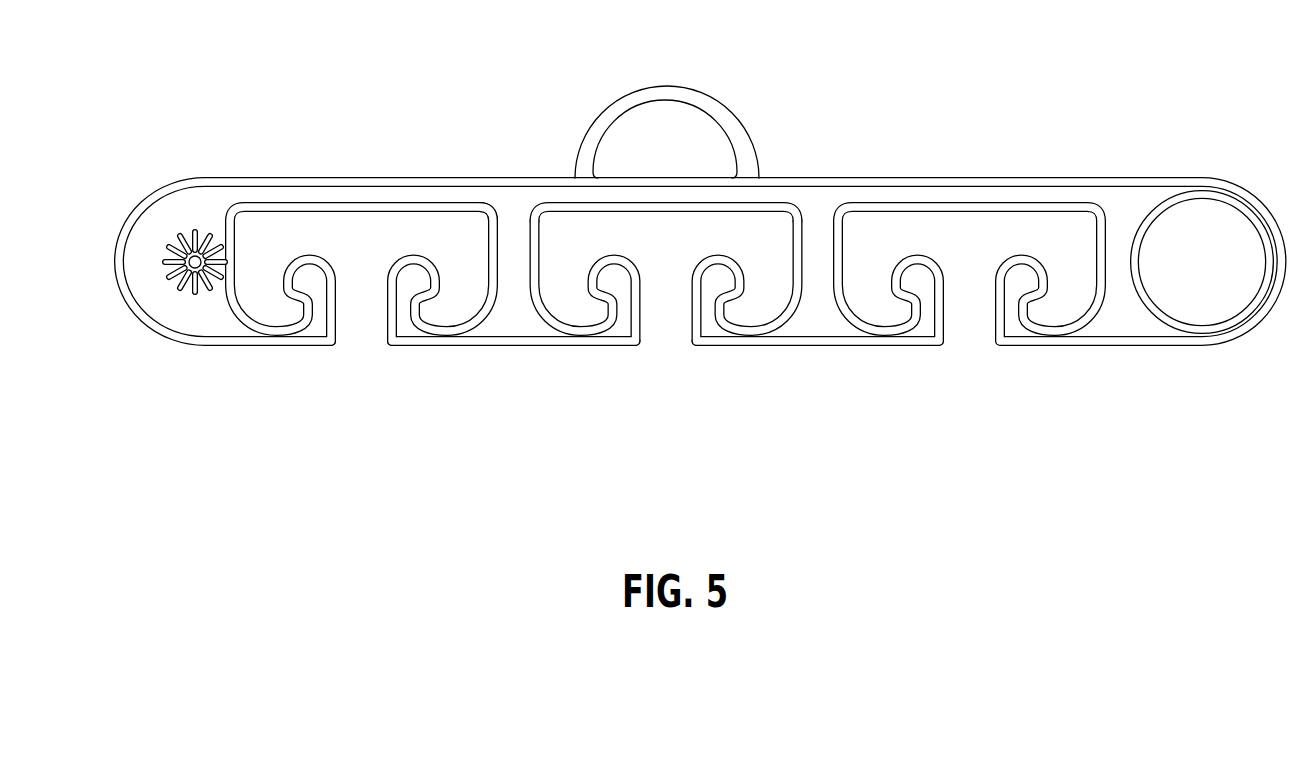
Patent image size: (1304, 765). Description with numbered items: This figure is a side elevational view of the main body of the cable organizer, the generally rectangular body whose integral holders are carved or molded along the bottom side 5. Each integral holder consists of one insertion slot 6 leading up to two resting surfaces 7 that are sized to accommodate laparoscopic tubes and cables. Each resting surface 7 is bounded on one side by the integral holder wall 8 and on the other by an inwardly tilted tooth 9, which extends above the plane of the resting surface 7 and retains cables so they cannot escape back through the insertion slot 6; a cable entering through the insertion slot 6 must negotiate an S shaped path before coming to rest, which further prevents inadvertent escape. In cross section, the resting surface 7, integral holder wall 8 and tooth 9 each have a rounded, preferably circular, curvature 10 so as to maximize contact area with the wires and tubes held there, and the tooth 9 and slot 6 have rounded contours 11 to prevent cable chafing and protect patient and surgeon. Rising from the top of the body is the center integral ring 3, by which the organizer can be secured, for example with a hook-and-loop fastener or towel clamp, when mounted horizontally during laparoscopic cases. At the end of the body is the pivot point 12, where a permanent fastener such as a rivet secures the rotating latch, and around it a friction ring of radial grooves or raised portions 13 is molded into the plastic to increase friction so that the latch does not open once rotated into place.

The center integral ring 3 is at (742, 132).
The bottom side 5 is at (287, 346).
The insertion slot 6 is at (369, 348).
The resting surface 7 is at (456, 314).
The integral holder wall 8 is at (487, 303).
The inwardly tilted tooth 9 is at (613, 282).
The rounded curvature 10 is at (758, 323).
The rounded contours 11 is at (937, 338).
The pivot point 12 is at (195, 272).
The radial grooves or raised portions 13 is at (168, 252).